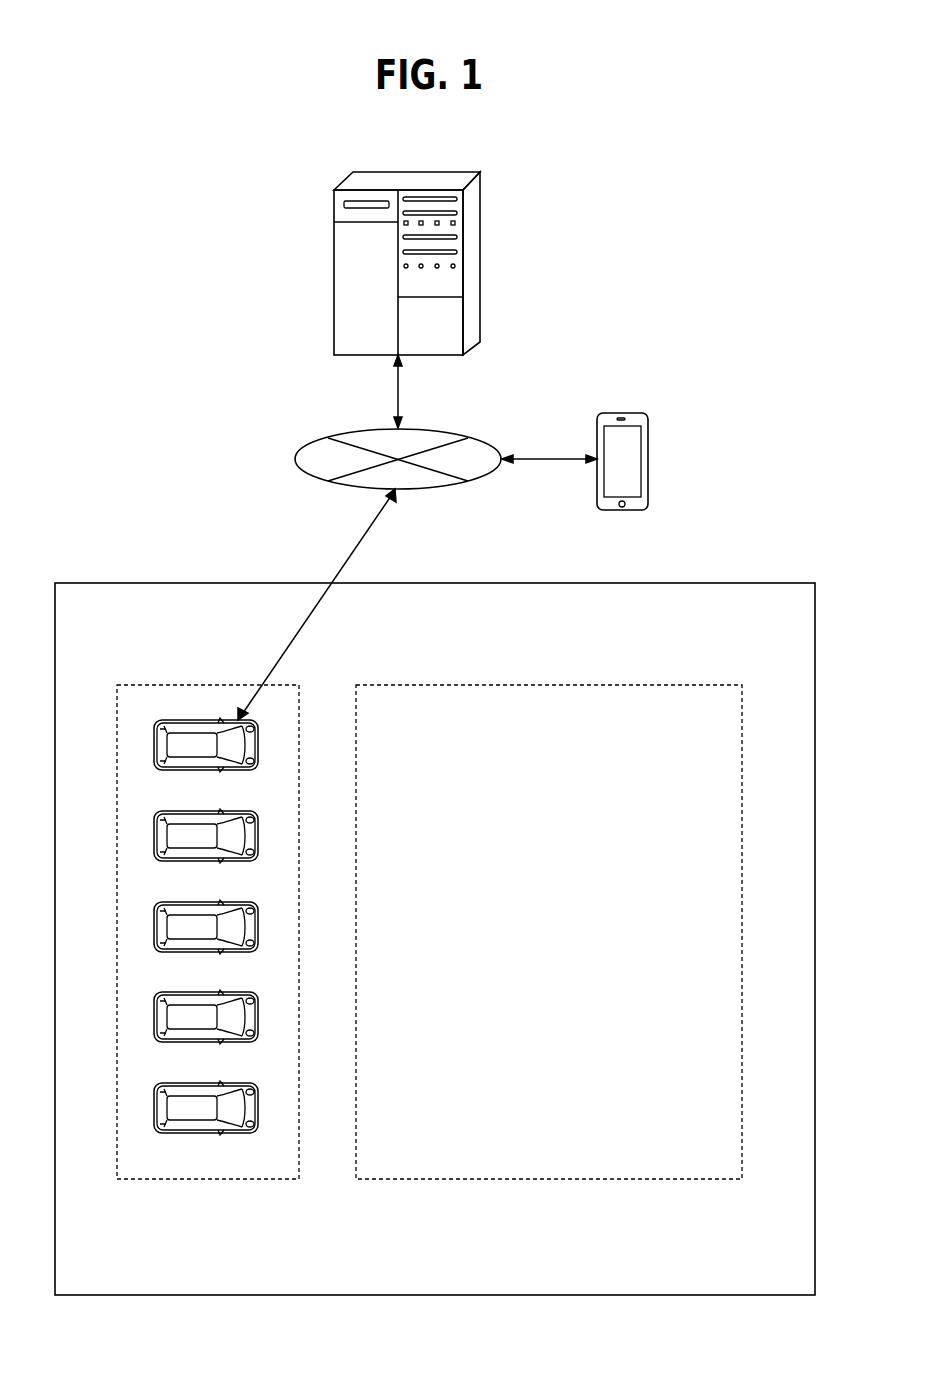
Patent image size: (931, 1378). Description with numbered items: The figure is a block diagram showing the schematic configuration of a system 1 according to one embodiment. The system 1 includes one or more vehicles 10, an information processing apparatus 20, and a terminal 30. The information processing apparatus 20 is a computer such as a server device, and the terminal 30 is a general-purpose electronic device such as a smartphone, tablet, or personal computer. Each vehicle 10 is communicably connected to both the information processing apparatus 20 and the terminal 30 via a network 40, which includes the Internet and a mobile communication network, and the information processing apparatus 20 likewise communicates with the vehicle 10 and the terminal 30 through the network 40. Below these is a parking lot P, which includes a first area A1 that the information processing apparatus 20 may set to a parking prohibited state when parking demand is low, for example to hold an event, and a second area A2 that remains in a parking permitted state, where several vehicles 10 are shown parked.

The system 1 is at (718, 242).
The vehicle 10 is at (154, 745).
The information processing apparatus 20 is at (481, 240).
The terminal 30 is at (649, 460).
The network 40 is at (298, 451).
The parking lot P is at (476, 582).
The first area A1 is at (553, 1180).
The second area A2 is at (205, 1180).